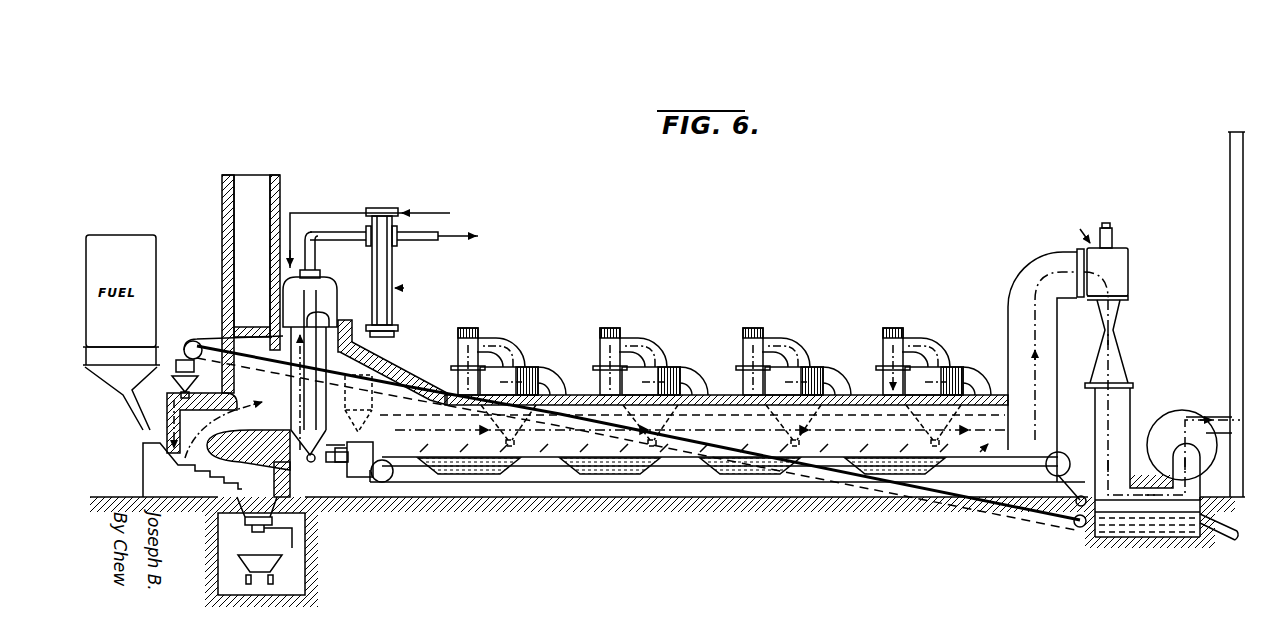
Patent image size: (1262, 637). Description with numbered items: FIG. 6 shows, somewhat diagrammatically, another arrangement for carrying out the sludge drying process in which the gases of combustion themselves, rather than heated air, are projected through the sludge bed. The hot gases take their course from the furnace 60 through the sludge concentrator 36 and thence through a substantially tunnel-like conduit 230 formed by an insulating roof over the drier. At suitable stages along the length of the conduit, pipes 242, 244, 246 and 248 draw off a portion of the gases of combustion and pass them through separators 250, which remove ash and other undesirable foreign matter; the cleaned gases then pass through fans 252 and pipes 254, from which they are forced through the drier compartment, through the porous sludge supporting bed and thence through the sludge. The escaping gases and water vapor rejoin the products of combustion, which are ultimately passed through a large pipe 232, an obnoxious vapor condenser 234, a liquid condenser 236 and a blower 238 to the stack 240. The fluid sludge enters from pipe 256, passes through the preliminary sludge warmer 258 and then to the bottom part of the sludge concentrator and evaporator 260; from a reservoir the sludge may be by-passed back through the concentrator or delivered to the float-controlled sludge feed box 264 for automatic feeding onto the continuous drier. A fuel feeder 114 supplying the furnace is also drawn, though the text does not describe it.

The sludge concentrator 36 is at (332, 350).
The furnace 60 is at (253, 424).
The fuel feeder 114 is at (175, 378).
The tunnel-like conduit 230 is at (581, 395).
The large pipe 232 is at (1024, 281).
The obnoxious vapor condenser 234 is at (1118, 270).
The liquid condenser 236 is at (1138, 527).
The blower 238 is at (1175, 425).
The stack 240 is at (1230, 334).
The pipe 242 is at (528, 380).
The pipe 244 is at (692, 378).
The pipe 246 is at (832, 381).
The pipe 248 is at (966, 383).
The separator 250 is at (511, 356).
The fan 252 is at (463, 333).
The pipe 254 is at (594, 473).
The pipe 256 is at (412, 212).
The preliminary sludge warmer 258 is at (392, 271).
The sludge concentrator and evaporator 260 is at (314, 462).
The float-controlled sludge feed box 264 is at (348, 477).